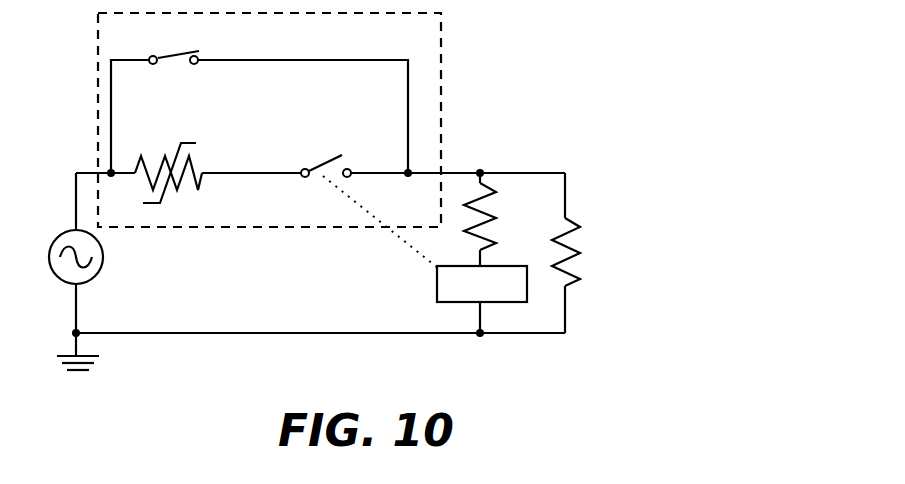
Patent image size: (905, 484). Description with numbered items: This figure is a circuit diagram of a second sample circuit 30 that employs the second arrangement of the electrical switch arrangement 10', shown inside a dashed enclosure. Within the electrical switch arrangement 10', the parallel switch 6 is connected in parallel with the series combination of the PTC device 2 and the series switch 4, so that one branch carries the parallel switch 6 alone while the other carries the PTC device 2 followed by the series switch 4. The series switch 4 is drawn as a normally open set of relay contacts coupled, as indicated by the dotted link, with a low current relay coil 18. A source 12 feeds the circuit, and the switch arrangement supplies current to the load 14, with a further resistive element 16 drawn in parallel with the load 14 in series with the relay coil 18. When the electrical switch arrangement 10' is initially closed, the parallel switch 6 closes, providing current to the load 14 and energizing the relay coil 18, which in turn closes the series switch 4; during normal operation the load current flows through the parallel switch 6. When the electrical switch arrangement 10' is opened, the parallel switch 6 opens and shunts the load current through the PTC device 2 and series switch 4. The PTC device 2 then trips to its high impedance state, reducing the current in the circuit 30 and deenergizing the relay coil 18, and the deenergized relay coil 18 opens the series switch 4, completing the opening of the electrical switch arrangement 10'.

The electrical switch arrangement 10' is at (269, 120).
The second sample circuit 30 is at (482, 105).
The parallel switch 6 is at (175, 68).
The PTC device 2 is at (187, 196).
The series switch 4 is at (327, 153).
The resistor 16 is at (487, 200).
The load 14 is at (573, 253).
The relay coil 18 is at (496, 298).
The AC source 12 is at (115, 260).